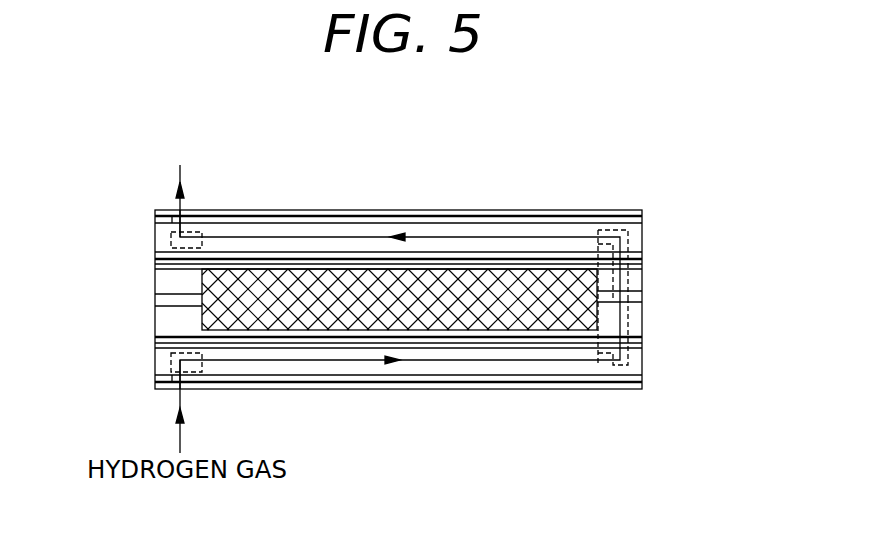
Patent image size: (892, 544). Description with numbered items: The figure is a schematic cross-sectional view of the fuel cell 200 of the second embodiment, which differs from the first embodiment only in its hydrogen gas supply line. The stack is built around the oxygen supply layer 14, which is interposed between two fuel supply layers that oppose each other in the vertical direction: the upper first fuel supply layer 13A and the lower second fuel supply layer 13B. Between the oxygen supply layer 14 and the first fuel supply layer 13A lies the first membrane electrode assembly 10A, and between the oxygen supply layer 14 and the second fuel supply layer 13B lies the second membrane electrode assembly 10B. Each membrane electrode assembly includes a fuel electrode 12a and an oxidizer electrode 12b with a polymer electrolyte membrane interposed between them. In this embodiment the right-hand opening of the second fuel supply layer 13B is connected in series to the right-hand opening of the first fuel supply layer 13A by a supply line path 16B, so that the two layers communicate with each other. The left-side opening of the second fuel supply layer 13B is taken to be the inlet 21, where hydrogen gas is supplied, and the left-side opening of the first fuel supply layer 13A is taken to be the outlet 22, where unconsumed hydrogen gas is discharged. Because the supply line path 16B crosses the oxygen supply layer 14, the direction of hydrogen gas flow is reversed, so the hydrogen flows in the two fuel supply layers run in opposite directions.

The fuel cell 200 is at (352, 173).
The first fuel supply layer 13A is at (642, 236).
The first membrane electrode assembly 10A is at (642, 258).
The supply line path 16B is at (642, 274).
The oxygen supply layer 14 is at (642, 298).
The second membrane electrode assembly 10B is at (642, 332).
The second fuel supply layer 13B is at (642, 362).
The fuel electrode 12a is at (155, 258).
The oxidizer electrode 12b is at (155, 268).
The inlet 21 is at (598, 232).
The outlet 22 is at (204, 233).